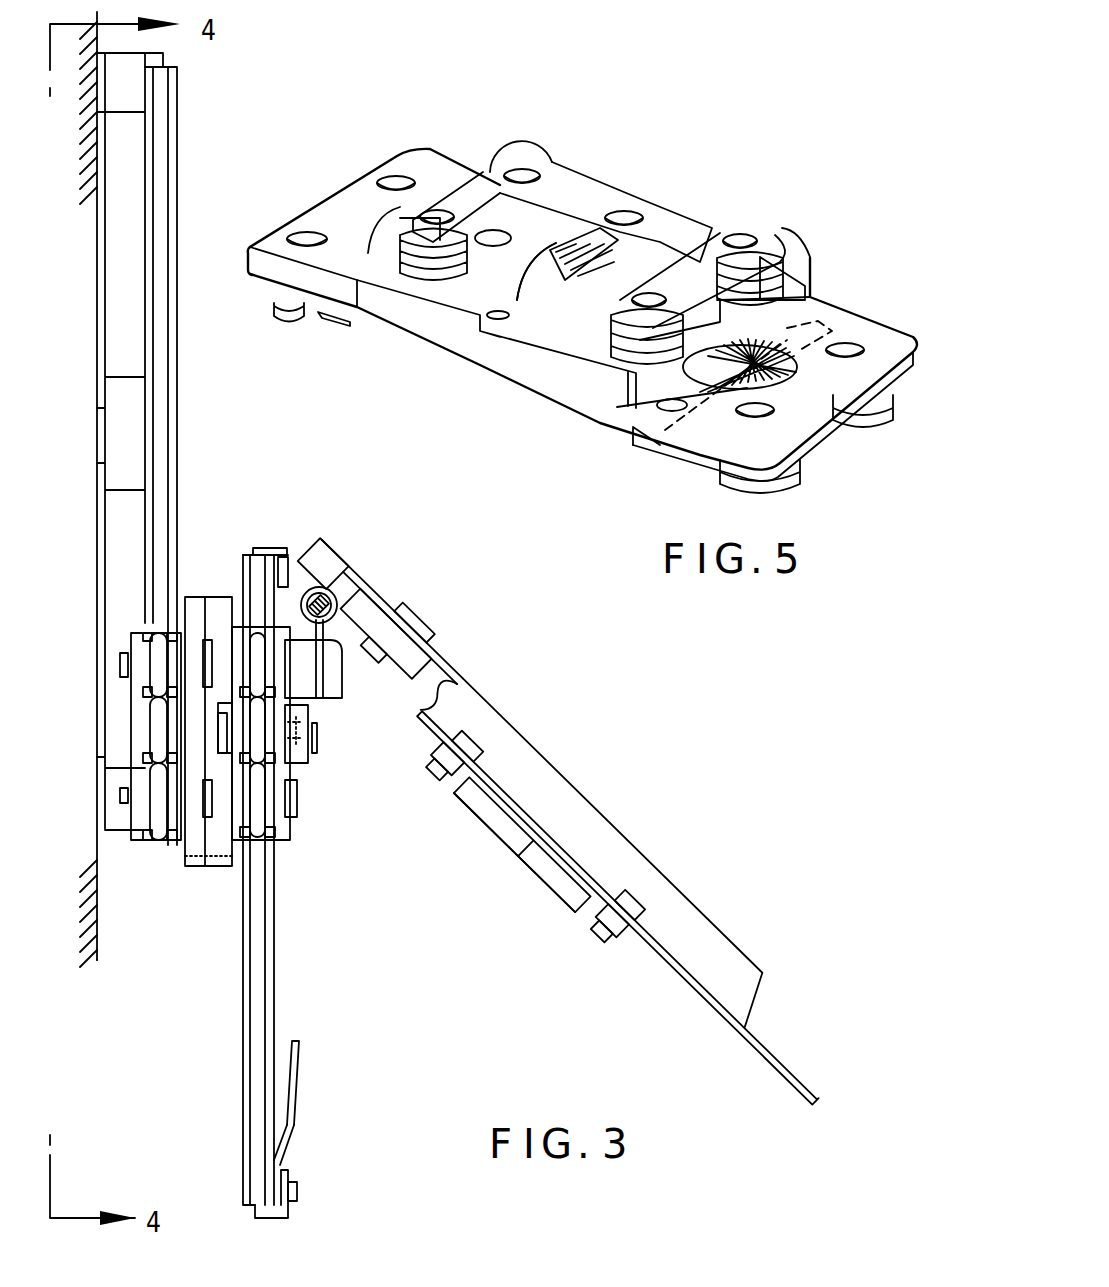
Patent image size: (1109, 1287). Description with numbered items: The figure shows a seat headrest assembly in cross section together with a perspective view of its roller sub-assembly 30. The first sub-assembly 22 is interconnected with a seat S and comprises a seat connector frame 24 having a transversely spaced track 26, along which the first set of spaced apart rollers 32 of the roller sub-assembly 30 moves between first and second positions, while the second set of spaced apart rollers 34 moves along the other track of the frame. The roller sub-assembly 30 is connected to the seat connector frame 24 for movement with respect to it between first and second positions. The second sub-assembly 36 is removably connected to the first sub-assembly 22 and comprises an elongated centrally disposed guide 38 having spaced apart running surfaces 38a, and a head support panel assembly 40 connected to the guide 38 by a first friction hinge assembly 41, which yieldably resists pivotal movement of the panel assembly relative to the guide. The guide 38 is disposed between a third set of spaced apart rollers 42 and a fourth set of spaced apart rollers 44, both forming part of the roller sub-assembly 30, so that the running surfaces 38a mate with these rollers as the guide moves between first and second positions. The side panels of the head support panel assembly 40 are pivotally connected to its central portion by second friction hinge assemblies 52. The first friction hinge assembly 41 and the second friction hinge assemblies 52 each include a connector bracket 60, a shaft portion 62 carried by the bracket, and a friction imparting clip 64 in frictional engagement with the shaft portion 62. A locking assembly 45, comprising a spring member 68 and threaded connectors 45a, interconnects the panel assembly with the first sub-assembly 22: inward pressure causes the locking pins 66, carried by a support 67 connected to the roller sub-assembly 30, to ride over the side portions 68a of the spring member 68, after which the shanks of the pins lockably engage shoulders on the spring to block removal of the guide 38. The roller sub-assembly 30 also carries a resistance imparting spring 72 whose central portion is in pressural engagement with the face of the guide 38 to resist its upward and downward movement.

In FIG. 3, the seat S is at (82, 127).
In FIG. 3, the first sub-assembly 22 is at (198, 479).
In FIG. 3, the seat connector frame 24 is at (178, 175).
In FIG. 3, the first track 26 is at (160, 398).
In FIG. 3, the roller sub-assembly 30 is at (193, 601).
In FIG. 5, the roller sub-assembly 30 is at (346, 194).
In FIG. 3, the first set of spaced apart rollers 32 is at (158, 668).
In FIG. 5, the first set of spaced apart rollers 32 is at (303, 317).
In FIG. 5, the second set of spaced apart rollers 34 is at (858, 425).
In FIG. 3, the second sub-assembly 36 is at (597, 780).
In FIG. 3, the guide 38 is at (274, 945).
In FIG. 3, the running surfaces 38a is at (255, 1007).
In FIG. 3, the head support panel assembly 40 is at (445, 663).
In FIG. 3, the first friction hinge assembly 41 is at (342, 588).
In FIG. 3, the third set of spaced apart rollers 42 is at (255, 668).
In FIG. 5, the third set of spaced apart rollers 42 is at (500, 162).
In FIG. 5, the fourth set of spaced apart rollers 44 is at (770, 260).
In FIG. 3, the locking assembly 45 is at (304, 1105).
In FIG. 3, the threaded connectors 45a is at (298, 1191).
In FIG. 3, the second friction hinge assemblies 52 is at (535, 877).
In FIG. 3, the connector bracket 60 is at (307, 657).
In FIG. 3, the shaft portion 62 is at (318, 588).
In FIG. 3, the friction imparting clip 64 is at (340, 613).
In FIG. 5, the locking pins 66 is at (524, 172).
In FIG. 3, the support 67 is at (307, 762).
In FIG. 5, the support 67 is at (650, 228).
In FIG. 3, the spring member 68 is at (299, 1050).
In FIG. 3, the side portions 68a is at (292, 1125).
In FIG. 5, the spring 72 is at (517, 303).